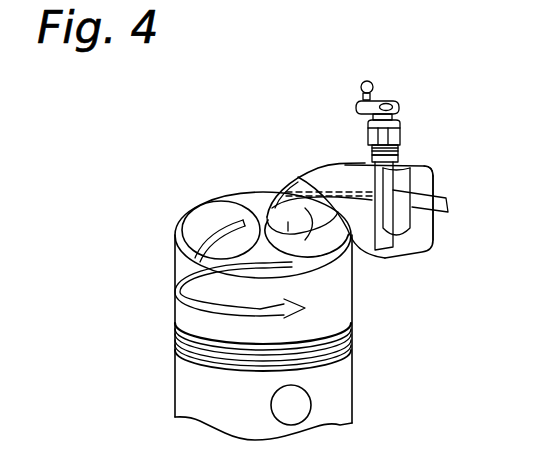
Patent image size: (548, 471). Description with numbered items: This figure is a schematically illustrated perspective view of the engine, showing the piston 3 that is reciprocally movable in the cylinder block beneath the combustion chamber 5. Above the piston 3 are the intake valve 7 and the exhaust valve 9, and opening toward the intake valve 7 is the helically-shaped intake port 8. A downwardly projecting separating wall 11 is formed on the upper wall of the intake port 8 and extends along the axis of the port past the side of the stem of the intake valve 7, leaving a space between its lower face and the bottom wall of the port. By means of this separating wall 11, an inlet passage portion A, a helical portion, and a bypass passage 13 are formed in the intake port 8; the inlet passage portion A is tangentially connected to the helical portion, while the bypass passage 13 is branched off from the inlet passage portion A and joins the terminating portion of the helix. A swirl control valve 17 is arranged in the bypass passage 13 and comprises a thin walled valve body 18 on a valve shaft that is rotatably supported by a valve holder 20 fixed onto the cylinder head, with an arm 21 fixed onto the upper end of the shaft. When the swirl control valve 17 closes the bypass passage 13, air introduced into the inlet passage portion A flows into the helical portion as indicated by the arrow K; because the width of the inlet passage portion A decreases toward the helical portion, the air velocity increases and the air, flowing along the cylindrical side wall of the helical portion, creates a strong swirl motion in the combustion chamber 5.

The piston 3 is at (237, 407).
The combustion chamber 5 is at (257, 197).
The intake valve 7 is at (305, 240).
The helically-shaped intake port 8 is at (389, 207).
The exhaust valve 9 is at (211, 219).
The separating wall 11 is at (432, 236).
The bypass passage 13 is at (398, 183).
The swirl control valve 17 is at (359, 145).
The thin walled valve body 18 is at (330, 176).
The valve holder 20 is at (390, 147).
The arm 21 is at (378, 101).
The inlet passage portion A is at (427, 182).
The arrow K is at (448, 201).